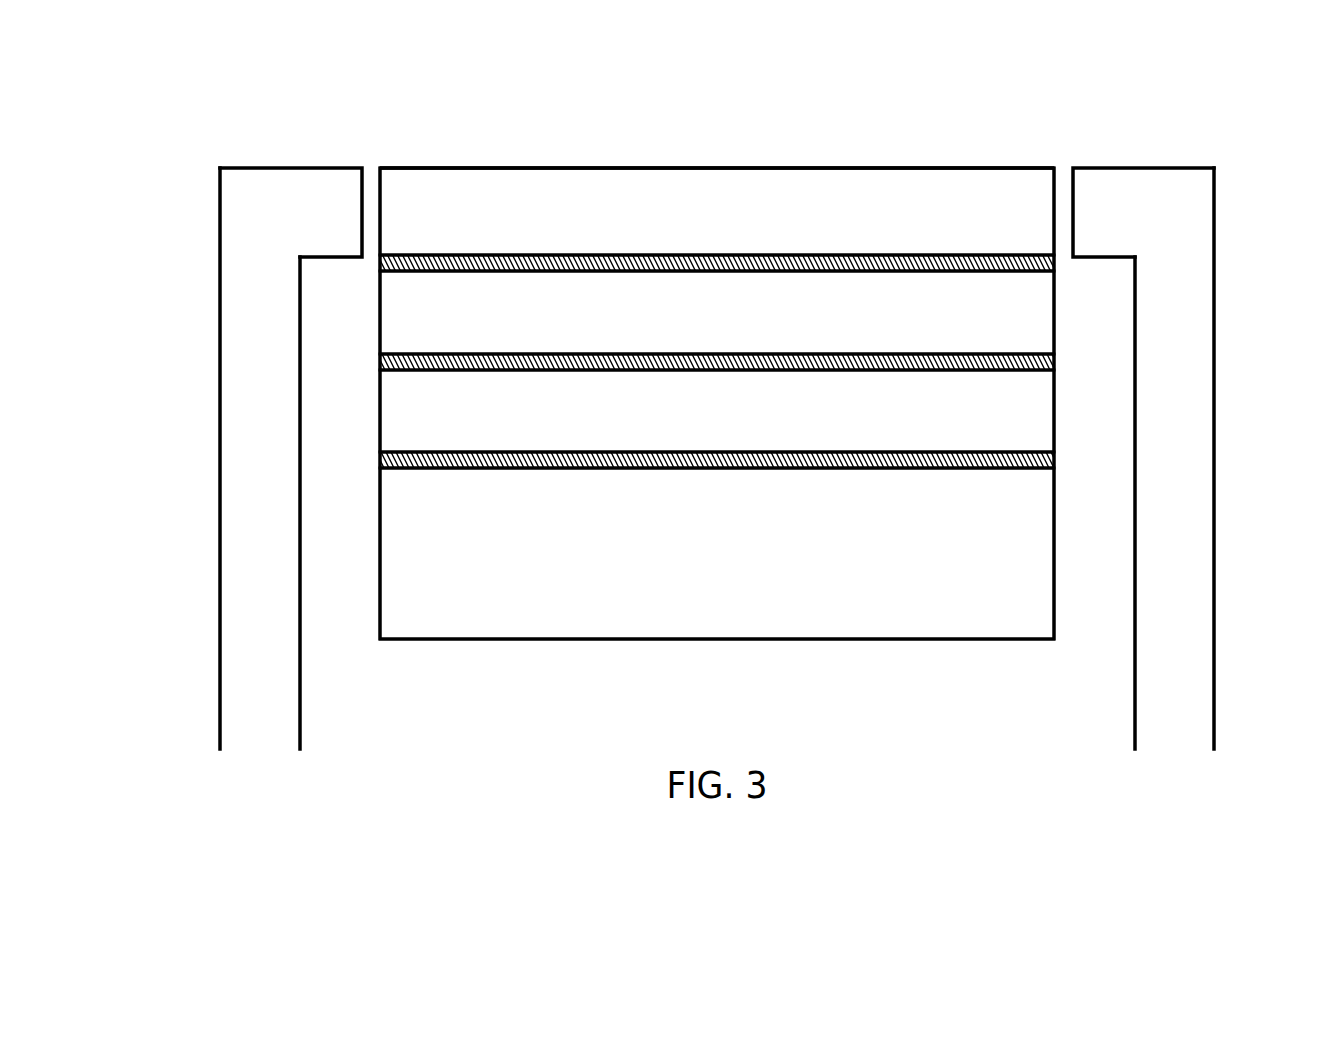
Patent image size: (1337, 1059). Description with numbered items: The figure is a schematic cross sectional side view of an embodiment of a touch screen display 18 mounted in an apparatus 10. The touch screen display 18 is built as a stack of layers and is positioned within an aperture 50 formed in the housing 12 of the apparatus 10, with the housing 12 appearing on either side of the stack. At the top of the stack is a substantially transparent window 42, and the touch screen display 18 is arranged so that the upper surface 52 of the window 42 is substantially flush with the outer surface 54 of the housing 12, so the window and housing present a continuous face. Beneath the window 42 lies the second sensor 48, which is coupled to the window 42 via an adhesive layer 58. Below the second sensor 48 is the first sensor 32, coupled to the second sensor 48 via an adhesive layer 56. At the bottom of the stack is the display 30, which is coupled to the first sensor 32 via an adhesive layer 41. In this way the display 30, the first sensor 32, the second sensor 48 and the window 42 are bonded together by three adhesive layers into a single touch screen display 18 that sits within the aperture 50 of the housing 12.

The apparatus 10 is at (1045, 87).
The housing 12 is at (243, 250).
The touch screen display 18 is at (694, 100).
The display 30 is at (1047, 552).
The first sensor 32 is at (1047, 403).
The adhesive layer 41 is at (1052, 460).
The window 42 is at (874, 193).
The second sensor 48 is at (1047, 298).
The aperture 50 is at (539, 100).
The upper surface 52 is at (772, 168).
The outer surface 54 is at (278, 168).
The adhesive layer 56 is at (1052, 363).
The adhesive layer 58 is at (948, 256).